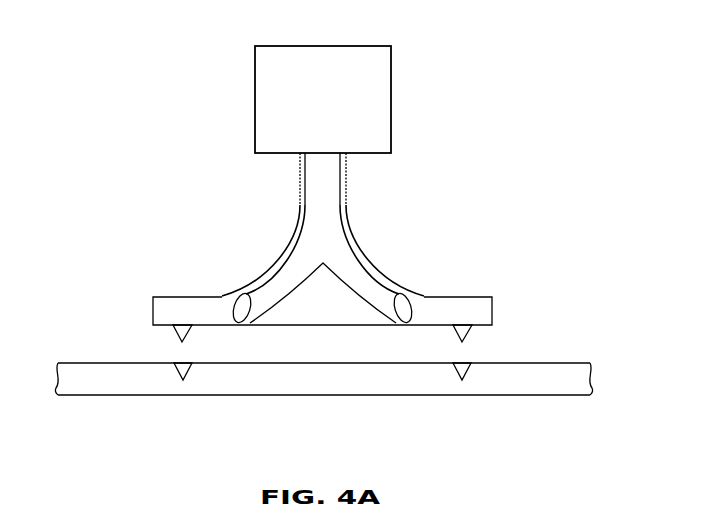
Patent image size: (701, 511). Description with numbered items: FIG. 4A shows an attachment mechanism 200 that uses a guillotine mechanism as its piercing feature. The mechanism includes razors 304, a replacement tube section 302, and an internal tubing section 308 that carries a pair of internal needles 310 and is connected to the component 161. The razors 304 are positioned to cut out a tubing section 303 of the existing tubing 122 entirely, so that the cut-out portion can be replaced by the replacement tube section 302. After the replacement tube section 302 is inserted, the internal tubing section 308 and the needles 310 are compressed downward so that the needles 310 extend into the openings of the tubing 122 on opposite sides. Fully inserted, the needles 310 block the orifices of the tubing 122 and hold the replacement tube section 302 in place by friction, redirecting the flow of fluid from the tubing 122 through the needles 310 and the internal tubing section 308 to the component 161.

The welding system 200 is at (160, 47).
The component 161 is at (391, 80).
The internal tubing section 308 is at (341, 182).
The internal needles 310 is at (277, 293).
The replacement tube section 302 is at (247, 290).
The razors 304 is at (175, 336).
The tubing section 303 is at (280, 365).
The tubing 122 is at (90, 395).